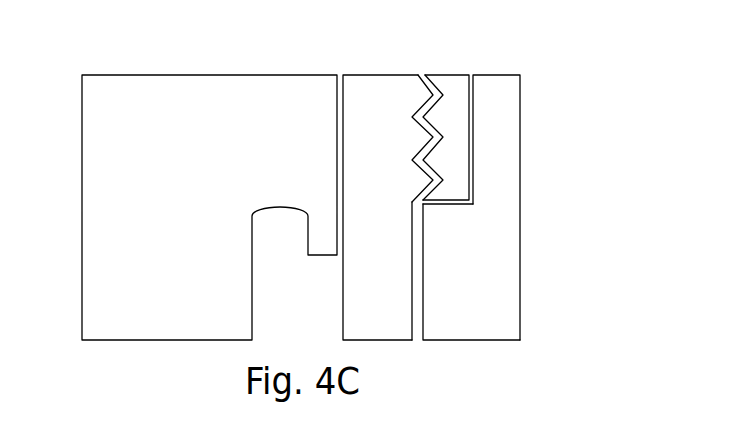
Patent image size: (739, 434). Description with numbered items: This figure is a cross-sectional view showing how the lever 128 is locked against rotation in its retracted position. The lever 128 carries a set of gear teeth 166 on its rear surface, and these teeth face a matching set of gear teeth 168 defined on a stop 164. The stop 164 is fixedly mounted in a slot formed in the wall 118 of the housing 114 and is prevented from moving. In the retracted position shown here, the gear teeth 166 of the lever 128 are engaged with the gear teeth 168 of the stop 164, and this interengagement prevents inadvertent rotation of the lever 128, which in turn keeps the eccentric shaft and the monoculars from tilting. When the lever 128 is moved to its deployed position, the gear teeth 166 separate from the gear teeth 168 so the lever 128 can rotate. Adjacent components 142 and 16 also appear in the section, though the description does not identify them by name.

The first component block 142 is at (185, 174).
The lever 128 is at (400, 150).
The gear teeth 166 is at (420, 96).
The gear teeth 168 is at (436, 80).
The stop 164 is at (462, 100).
The wall 118 is at (512, 143).
The housing 114 is at (493, 304).
The bottom interface of strip 16 is at (458, 205).